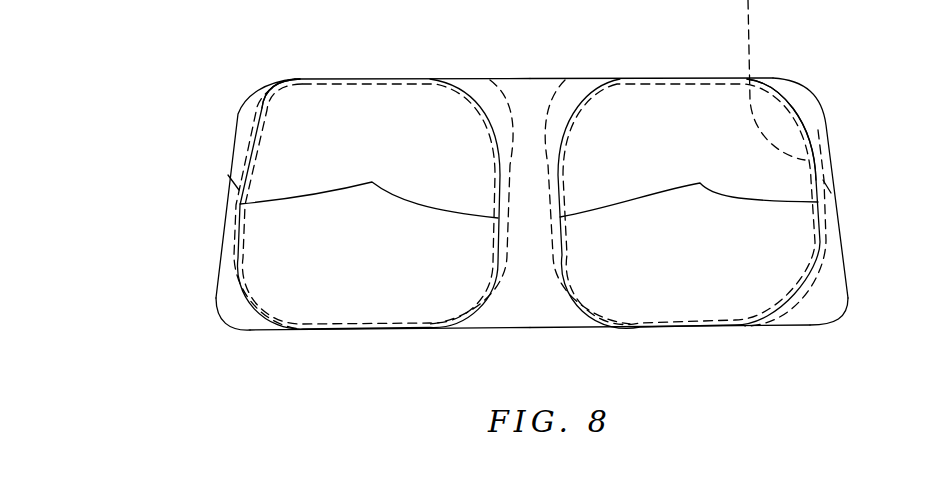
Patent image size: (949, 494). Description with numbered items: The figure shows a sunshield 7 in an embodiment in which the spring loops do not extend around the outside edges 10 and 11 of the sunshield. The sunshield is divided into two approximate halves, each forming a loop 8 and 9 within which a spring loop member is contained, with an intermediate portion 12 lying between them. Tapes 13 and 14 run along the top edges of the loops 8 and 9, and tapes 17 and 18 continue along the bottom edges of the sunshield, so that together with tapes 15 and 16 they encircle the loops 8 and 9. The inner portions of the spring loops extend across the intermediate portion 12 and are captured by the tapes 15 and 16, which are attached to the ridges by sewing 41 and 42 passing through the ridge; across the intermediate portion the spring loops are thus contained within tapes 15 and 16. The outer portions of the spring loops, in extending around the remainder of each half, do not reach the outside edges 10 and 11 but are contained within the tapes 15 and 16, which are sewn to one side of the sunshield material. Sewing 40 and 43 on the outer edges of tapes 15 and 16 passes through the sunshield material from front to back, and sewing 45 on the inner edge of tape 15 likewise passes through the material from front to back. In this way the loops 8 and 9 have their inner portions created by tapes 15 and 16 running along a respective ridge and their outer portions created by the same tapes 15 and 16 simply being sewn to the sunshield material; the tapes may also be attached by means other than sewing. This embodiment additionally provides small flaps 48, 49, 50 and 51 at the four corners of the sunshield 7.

The sunshield 7 is at (526, 209).
The loop 8 is at (363, 256).
The loop 9 is at (703, 250).
The outside edge 10 is at (221, 247).
The outside edge 11 is at (843, 215).
The intermediate portion 12 is at (543, 294).
The tape 13 is at (372, 79).
The tape 14 is at (683, 78).
The tape 15 is at (369, 190).
The tape 16 is at (689, 189).
The tape 17 is at (363, 330).
The tape 18 is at (702, 327).
The sewing 40 is at (220, 165).
The sewing 41 is at (490, 80).
The sewing 42 is at (565, 80).
The sewing 43 is at (838, 165).
The sewing 45 is at (272, 88).
The flap 48 is at (238, 308).
The flap 49 is at (252, 101).
The flap 50 is at (797, 97).
The flap 51 is at (830, 302).